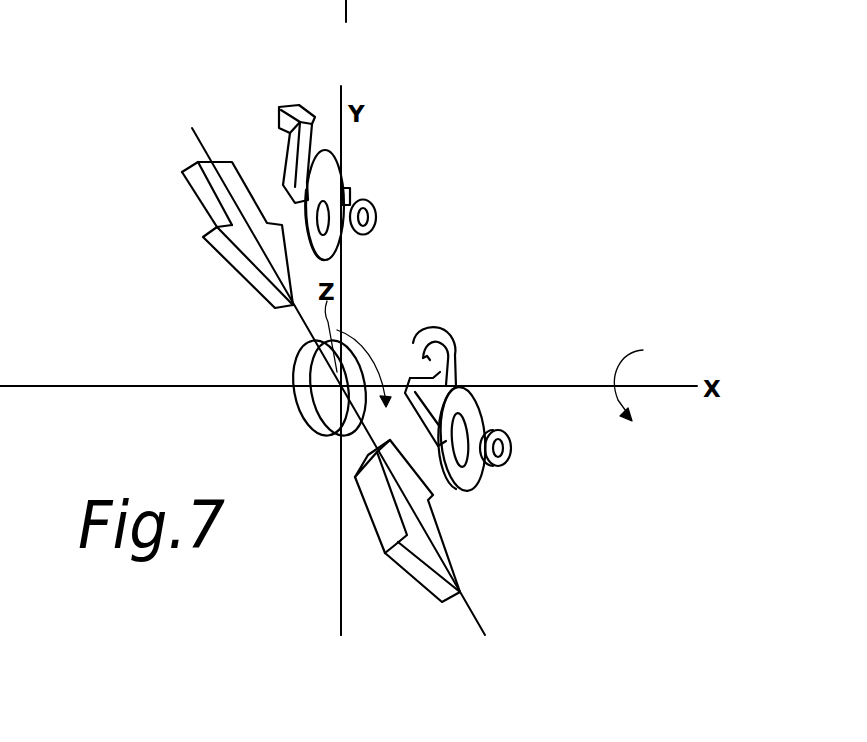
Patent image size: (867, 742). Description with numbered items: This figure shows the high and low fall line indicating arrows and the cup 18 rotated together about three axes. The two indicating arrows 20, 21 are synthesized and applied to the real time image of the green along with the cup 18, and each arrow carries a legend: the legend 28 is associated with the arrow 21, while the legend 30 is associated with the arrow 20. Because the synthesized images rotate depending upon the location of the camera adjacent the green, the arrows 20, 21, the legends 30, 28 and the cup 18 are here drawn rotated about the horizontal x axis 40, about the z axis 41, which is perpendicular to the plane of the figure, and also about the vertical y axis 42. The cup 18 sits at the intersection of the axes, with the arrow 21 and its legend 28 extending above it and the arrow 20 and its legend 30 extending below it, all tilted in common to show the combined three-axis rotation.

The cup 18 is at (293, 357).
The indicating arrow 20 is at (422, 582).
The indicating arrow 21 is at (207, 193).
The legend 28 is at (349, 181).
The legend 30 is at (460, 363).
The x axis 40 is at (673, 386).
The z axis 41 is at (338, 388).
The y axis 42 is at (338, 597).